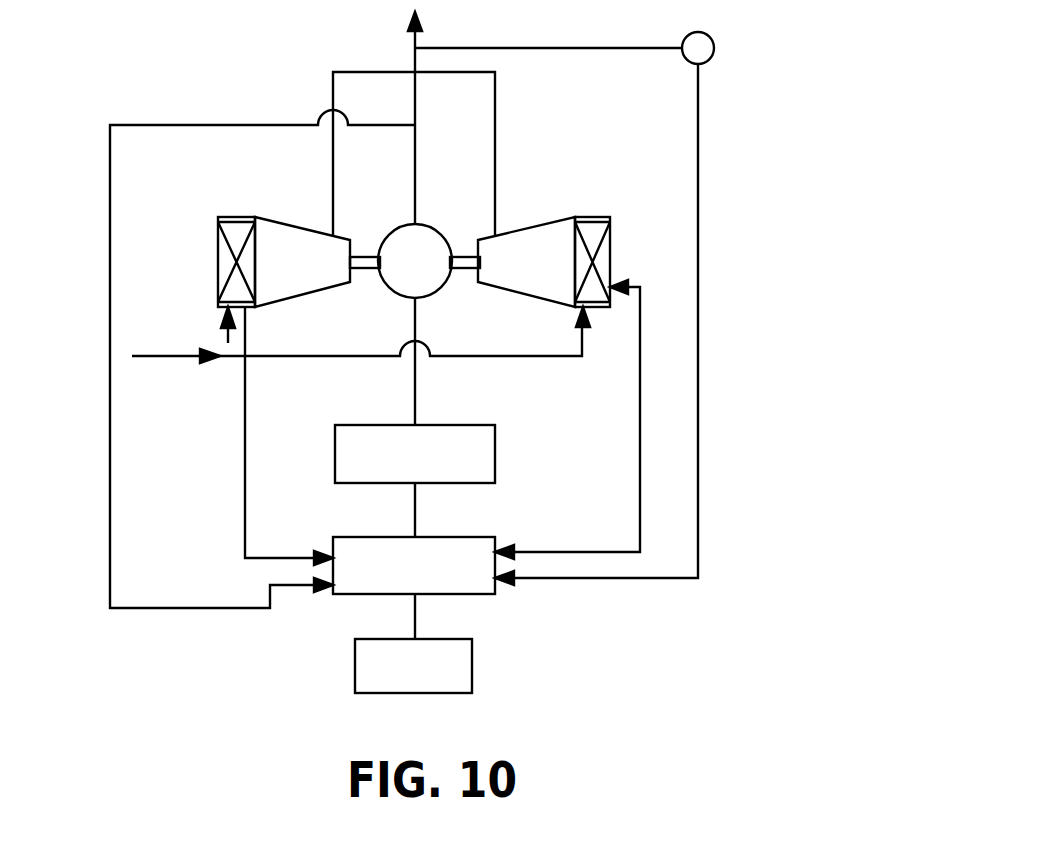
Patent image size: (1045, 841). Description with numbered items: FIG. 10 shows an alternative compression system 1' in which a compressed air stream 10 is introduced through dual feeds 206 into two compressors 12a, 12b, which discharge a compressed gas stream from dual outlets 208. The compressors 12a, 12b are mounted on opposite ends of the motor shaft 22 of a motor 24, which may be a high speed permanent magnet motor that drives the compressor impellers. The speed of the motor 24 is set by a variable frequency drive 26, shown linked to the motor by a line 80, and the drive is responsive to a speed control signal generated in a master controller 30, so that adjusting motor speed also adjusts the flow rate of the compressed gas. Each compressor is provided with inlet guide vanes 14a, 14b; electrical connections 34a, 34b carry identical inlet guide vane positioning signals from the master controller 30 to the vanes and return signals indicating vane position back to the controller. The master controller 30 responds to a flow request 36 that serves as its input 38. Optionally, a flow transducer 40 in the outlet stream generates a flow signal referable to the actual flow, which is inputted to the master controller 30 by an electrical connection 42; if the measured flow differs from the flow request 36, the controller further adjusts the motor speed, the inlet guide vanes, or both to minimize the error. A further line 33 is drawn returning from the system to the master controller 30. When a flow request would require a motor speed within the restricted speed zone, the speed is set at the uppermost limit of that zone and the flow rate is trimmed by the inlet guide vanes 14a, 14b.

The compression system 1' is at (776, 551).
The compressed air stream 10 is at (170, 358).
The compressor 12a is at (278, 238).
The compressor 12b is at (535, 240).
The inlet guide vanes 14a is at (230, 222).
The inlet guide vanes 14b is at (594, 225).
The motor shaft 22 is at (364, 255).
The motor 24 is at (379, 284).
The variable frequency drive 26 is at (495, 430).
The master controller 30 is at (486, 540).
The feedback line 33 is at (110, 448).
The electrical connection 34a is at (245, 518).
The electrical connection 34b is at (640, 462).
The flow request 36 is at (376, 693).
The input 38 is at (415, 615).
The flow transducer 40 is at (714, 47).
The electrical connection 42 is at (698, 365).
The motor control line 80 is at (415, 392).
The dual feeds 206 is at (322, 374).
The dual outlets 208 is at (517, 98).